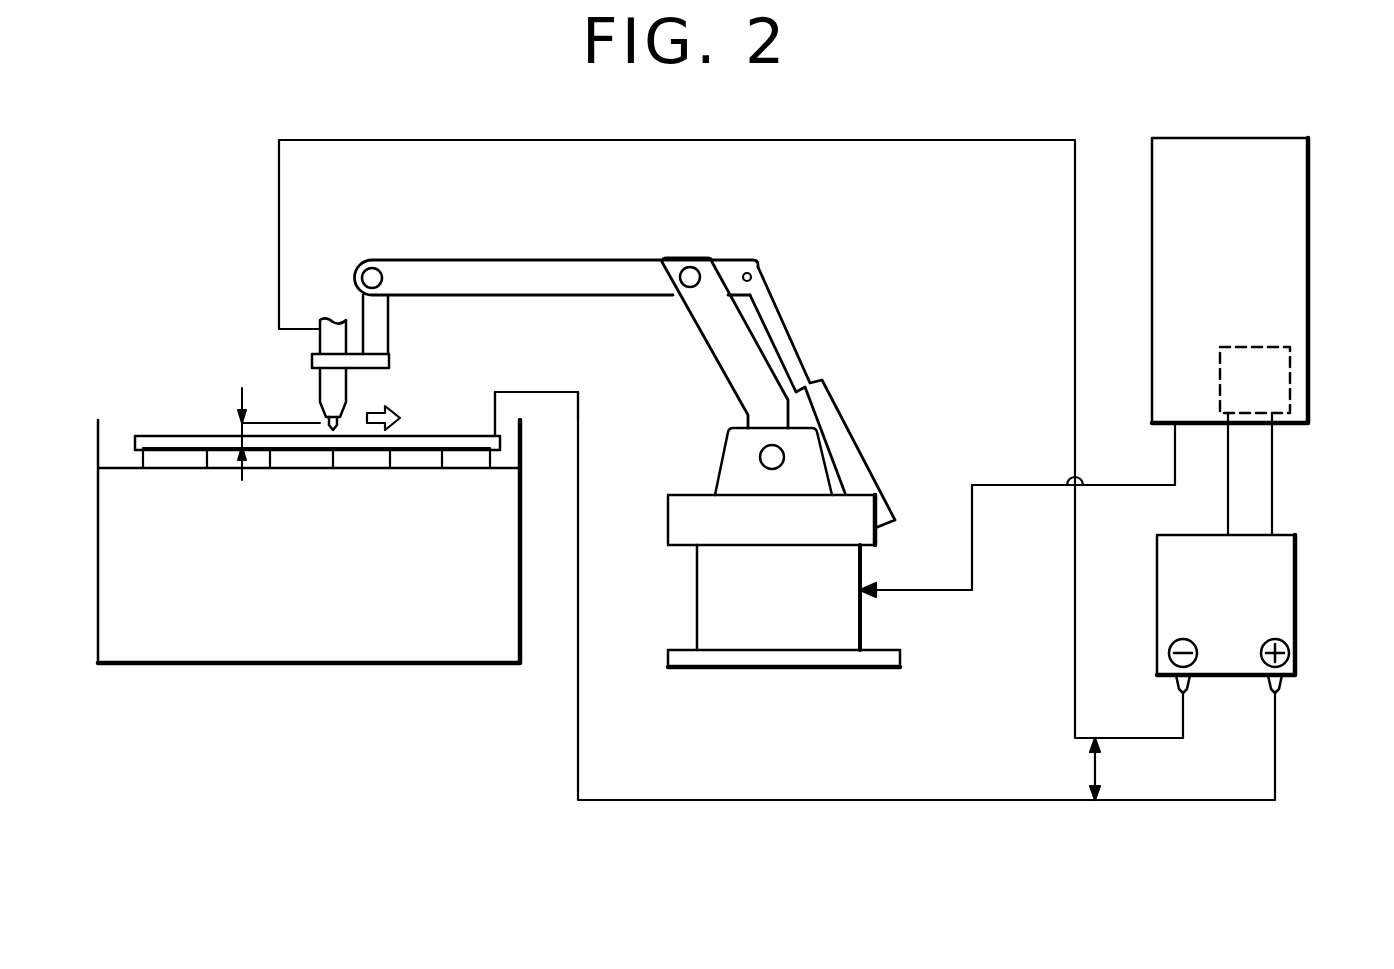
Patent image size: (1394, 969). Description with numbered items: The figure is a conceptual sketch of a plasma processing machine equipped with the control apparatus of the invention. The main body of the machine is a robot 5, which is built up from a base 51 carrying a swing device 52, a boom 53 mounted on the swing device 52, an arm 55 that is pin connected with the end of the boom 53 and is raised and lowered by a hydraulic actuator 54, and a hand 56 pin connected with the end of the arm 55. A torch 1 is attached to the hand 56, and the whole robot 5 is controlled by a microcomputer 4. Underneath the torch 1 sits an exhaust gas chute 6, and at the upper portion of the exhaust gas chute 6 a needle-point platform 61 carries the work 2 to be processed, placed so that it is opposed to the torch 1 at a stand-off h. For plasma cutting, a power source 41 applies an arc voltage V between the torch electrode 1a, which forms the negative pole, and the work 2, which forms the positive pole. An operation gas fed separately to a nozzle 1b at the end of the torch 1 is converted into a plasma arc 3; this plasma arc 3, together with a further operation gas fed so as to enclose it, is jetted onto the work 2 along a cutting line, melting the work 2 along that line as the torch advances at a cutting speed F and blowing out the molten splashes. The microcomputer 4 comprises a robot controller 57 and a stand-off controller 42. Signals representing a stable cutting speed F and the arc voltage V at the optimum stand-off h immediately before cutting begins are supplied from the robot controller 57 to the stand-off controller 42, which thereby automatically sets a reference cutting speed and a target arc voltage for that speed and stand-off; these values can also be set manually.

The torch 1 is at (320, 377).
The torch electrode 1a is at (328, 333).
The nozzle 1b is at (320, 418).
The work 2 is at (148, 437).
The plasma arc 3 is at (338, 432).
The microcomputer 4 is at (1312, 225).
The power source 41 is at (1285, 605).
The stand-off controller 42 is at (1290, 387).
The robot 5 is at (785, 300).
The base 51 is at (853, 623).
The swing device 52 is at (692, 497).
The boom 53 is at (707, 335).
The hydraulic actuator 54 is at (845, 423).
The arm 55 is at (555, 260).
The hand 56 is at (390, 322).
The robot controller 57 is at (1300, 318).
The exhaust gas chute 6 is at (413, 665).
The needle-point platform 61 is at (492, 460).
The stand-off h is at (240, 420).
The cutting speed F is at (400, 417).
The arc voltage V is at (1093, 772).